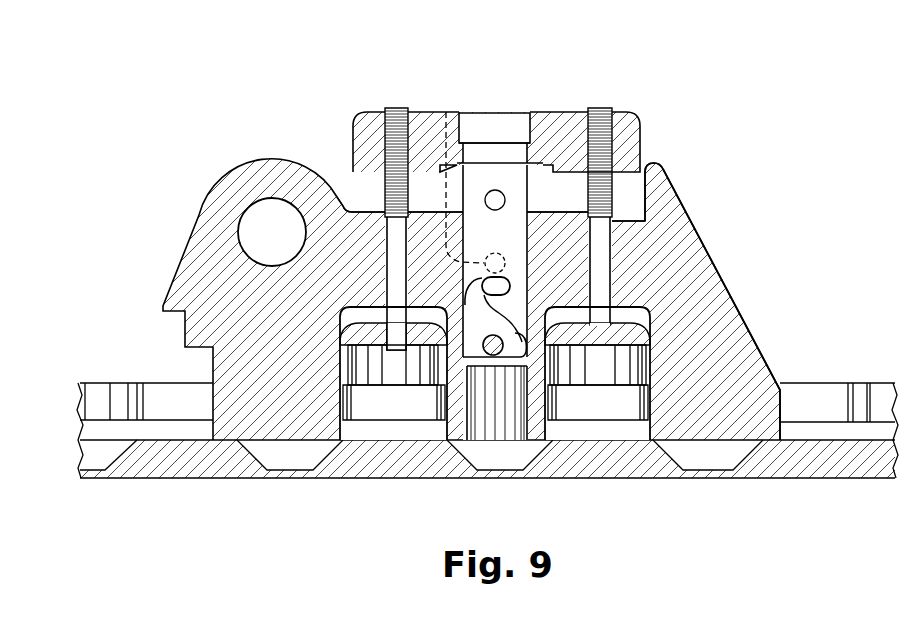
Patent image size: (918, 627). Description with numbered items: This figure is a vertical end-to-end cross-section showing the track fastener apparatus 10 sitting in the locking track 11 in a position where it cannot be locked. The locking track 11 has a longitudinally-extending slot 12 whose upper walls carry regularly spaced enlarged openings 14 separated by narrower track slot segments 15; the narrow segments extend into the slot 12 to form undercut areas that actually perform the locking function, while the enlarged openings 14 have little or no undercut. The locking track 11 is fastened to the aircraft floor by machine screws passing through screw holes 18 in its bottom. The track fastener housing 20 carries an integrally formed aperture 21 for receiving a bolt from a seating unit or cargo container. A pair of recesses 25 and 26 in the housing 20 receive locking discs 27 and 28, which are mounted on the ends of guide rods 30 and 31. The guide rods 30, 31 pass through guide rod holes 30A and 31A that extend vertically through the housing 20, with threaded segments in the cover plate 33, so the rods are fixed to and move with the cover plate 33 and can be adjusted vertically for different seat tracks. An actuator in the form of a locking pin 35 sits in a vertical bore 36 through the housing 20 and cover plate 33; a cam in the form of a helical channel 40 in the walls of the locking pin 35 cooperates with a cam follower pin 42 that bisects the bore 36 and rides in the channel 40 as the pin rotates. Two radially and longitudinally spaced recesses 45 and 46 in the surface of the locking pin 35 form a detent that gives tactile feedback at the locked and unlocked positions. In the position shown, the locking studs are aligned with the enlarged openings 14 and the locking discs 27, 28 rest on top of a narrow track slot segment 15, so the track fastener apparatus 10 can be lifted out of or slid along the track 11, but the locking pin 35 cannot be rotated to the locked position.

The track fastener apparatus 10 is at (204, 136).
The locking track 11 is at (97, 458).
The slot 12 is at (828, 453).
The enlarged openings 14 is at (873, 383).
The track slot segments 15 is at (800, 397).
The screw holes 18 is at (315, 448).
The track fastener housing 20 is at (222, 257).
The aperture 21 is at (250, 216).
The recess 25 is at (562, 308).
The recess 26 is at (427, 190).
The locking disc 27 is at (647, 308).
The locking disc 28 is at (340, 322).
The guide rod 30 is at (613, 221).
The guide rod hole 30A is at (613, 243).
The guide rod 31 is at (388, 258).
The guide rod hole 31A is at (358, 197).
The cover plate 33 is at (637, 138).
The locking pin 35 is at (503, 117).
The vertical bore 36 is at (487, 420).
The helical channel 40 is at (512, 352).
The cam follower pin 42 is at (468, 340).
The recess 45 is at (499, 192).
The recess 46 is at (446, 112).